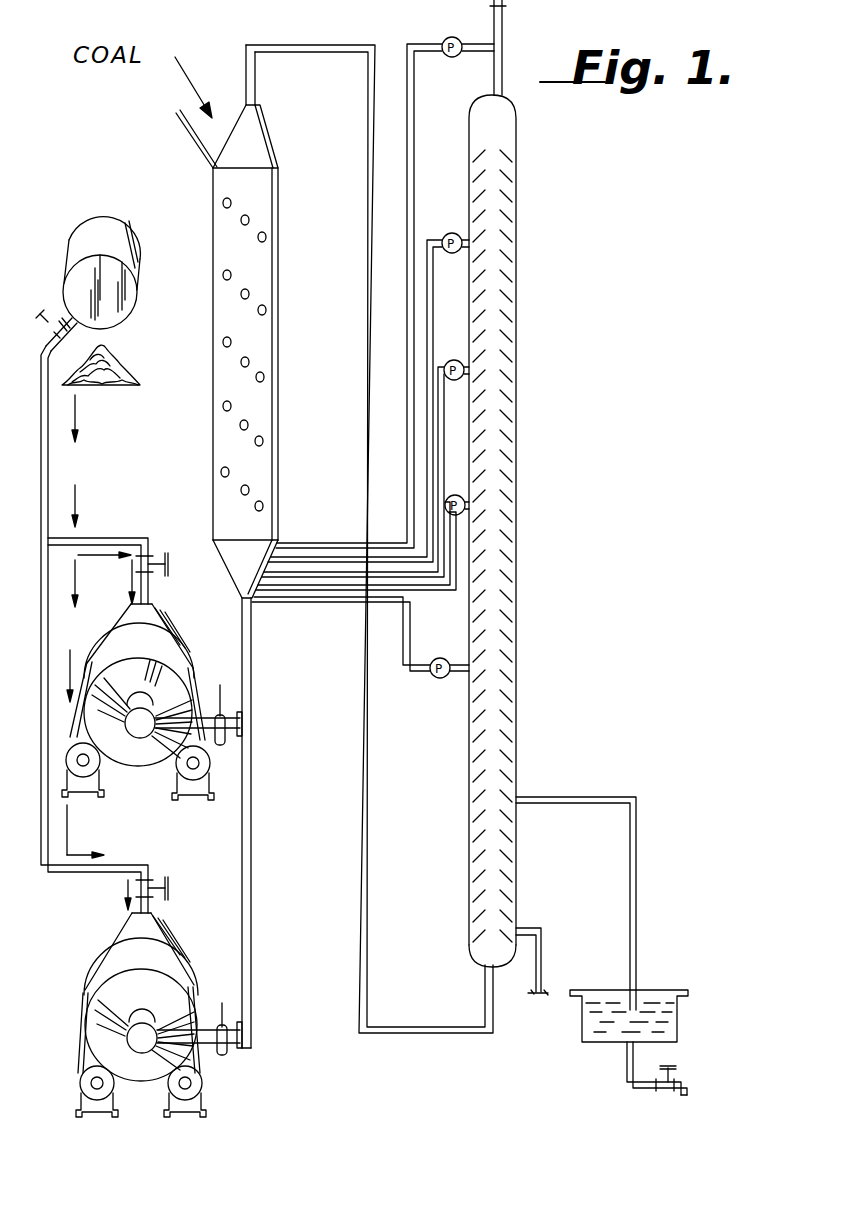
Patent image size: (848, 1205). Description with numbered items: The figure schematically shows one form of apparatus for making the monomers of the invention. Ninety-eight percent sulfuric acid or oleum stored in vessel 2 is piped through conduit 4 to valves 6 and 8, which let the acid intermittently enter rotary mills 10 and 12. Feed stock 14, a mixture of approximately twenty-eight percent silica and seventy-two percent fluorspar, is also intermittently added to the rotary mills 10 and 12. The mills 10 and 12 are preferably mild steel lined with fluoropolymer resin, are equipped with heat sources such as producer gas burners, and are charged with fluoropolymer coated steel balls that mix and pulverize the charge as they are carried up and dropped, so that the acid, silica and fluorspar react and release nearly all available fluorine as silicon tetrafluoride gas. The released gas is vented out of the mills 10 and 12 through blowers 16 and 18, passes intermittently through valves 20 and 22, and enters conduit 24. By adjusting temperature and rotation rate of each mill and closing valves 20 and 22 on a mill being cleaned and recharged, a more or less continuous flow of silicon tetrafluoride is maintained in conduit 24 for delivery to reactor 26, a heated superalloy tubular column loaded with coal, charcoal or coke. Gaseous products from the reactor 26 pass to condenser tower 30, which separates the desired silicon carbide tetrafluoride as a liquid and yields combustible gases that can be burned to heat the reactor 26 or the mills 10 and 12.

The vessel 2 is at (127, 263).
The conduit 4 is at (48, 490).
The valve 6 is at (149, 560).
The valve 8 is at (147, 883).
The rotary mill 10 is at (187, 634).
The rotary mill 12 is at (177, 937).
The feed stock 14 is at (115, 362).
The blower 16 is at (130, 730).
The blower 18 is at (142, 1035).
The valve 20 is at (226, 720).
The valve 22 is at (228, 1032).
The conduit 24 is at (253, 657).
The reactor 26 is at (274, 344).
The condenser tower 30 is at (493, 407).